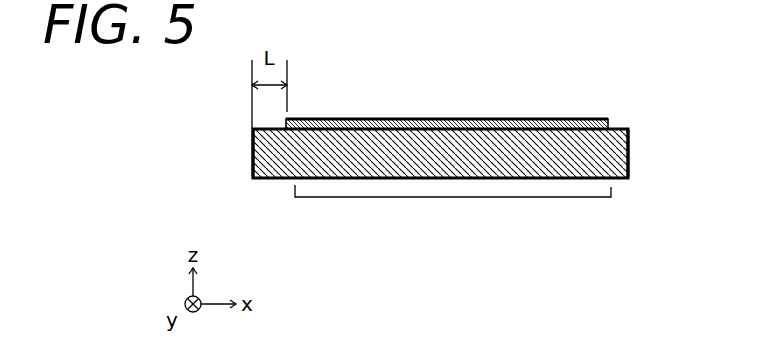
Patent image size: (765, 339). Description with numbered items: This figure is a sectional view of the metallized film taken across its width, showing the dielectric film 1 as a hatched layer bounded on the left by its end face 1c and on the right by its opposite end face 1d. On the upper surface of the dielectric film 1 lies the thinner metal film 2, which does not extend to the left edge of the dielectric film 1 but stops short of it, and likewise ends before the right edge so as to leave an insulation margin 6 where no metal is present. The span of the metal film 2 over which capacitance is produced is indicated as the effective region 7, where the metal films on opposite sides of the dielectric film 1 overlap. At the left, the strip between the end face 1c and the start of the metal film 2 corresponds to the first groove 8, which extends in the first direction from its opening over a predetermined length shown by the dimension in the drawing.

The dielectric film 1 is at (277, 158).
The end face of dielectric film 1c is at (253, 146).
The end face of dielectric film 1d is at (628, 152).
The metal film 2 is at (375, 118).
The insulation margin 6 is at (621, 128).
The effective region 7 is at (453, 197).
The first groove 8 is at (268, 124).